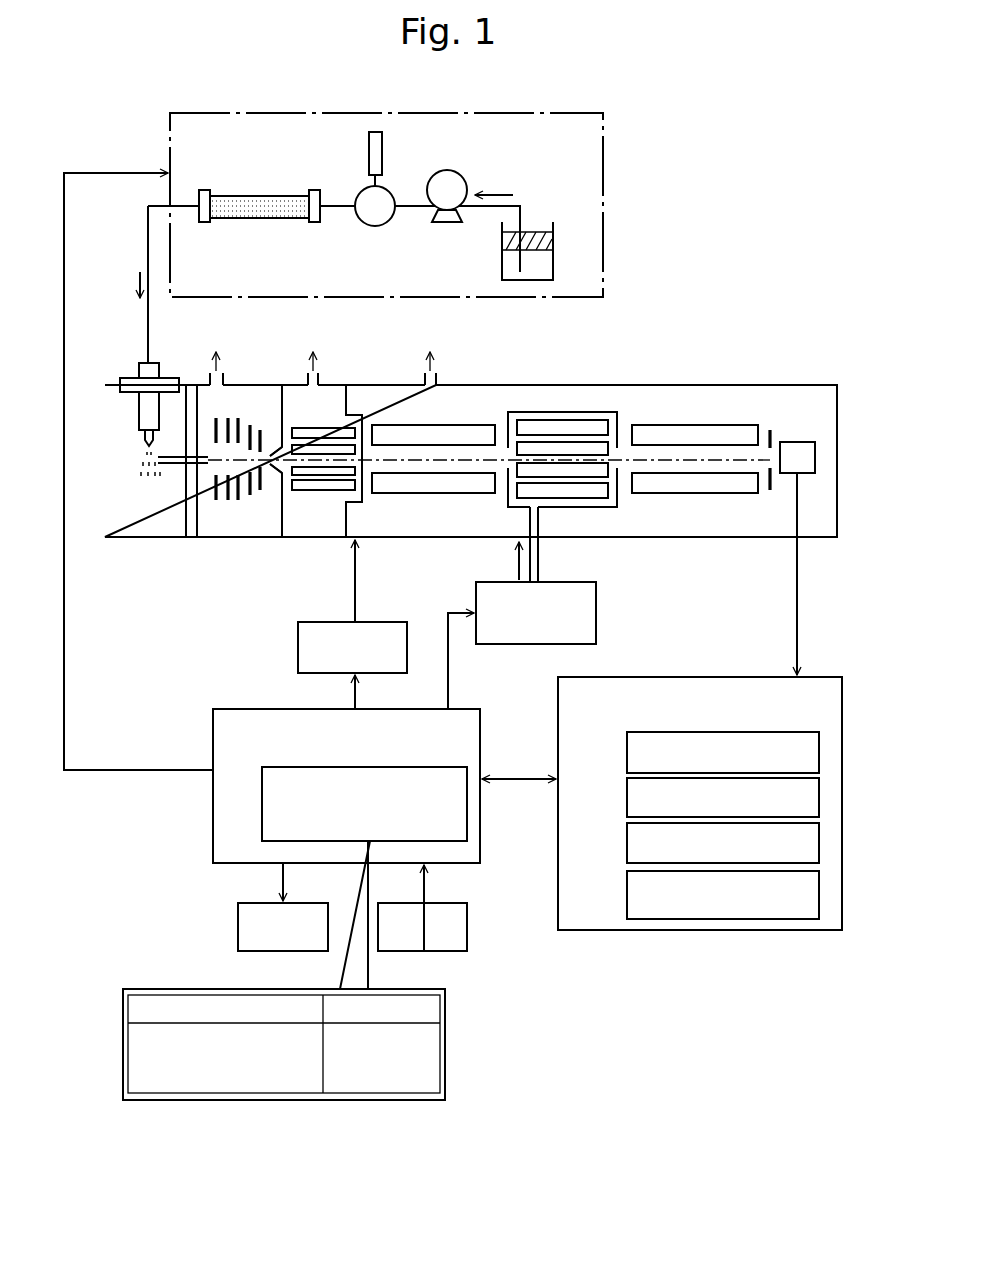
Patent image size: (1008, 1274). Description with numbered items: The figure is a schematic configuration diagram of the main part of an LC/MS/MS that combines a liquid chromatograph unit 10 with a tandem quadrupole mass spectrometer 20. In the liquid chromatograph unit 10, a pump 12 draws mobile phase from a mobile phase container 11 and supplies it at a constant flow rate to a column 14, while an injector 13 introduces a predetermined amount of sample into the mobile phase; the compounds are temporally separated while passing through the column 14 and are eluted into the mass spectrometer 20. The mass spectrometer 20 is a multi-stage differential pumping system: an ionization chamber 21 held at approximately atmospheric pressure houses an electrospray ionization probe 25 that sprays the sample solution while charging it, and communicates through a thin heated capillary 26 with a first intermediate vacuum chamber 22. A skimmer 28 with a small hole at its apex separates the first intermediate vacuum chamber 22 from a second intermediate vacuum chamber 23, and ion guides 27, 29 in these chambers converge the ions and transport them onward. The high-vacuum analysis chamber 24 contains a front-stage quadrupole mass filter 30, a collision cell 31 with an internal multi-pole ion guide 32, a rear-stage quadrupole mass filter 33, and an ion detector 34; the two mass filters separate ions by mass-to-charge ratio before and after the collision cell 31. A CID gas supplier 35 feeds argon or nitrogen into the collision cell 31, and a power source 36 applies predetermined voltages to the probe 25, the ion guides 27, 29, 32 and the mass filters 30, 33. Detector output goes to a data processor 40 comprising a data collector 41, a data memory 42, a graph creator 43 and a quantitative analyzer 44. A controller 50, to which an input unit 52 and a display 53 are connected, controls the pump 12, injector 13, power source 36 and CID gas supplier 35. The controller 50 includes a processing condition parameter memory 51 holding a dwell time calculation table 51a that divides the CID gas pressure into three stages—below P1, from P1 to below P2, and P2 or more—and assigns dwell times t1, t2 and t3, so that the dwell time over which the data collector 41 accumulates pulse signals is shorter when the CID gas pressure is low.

The liquid chromatograph unit 10 is at (604, 137).
The mobile phase container 11 is at (553, 250).
The pump 12 is at (450, 223).
The injector 13 is at (378, 226).
The column 14 is at (276, 222).
The mass spectrometer 20 is at (685, 336).
The ionization chamber 21 is at (137, 530).
The first intermediate vacuum chamber 22 is at (212, 530).
The second intermediate vacuum chamber 23 is at (296, 530).
The analysis chamber 24 is at (406, 530).
The electrospray ionization probe 25 is at (138, 410).
The heated capillary 26 is at (178, 466).
The ion guide 27 is at (245, 415).
The skimmer 28 is at (275, 470).
The ion guide 29 is at (327, 428).
The front-stage quadrupole mass filter 30 is at (462, 426).
The collision cell 31 is at (594, 412).
The multi-pole ion guide 32 is at (548, 420).
The rear-stage quadrupole mass filter 33 is at (720, 425).
The ion detector 34 is at (797, 442).
The CID gas supplier 35 is at (598, 600).
The power source 36 is at (297, 637).
The data processor 40 is at (655, 677).
The data collector 41 is at (626, 748).
The data memory 42 is at (626, 794).
The graph creator 43 is at (626, 841).
The quantitative analyzer 44 is at (626, 888).
The controller 50 is at (212, 731).
The processing condition parameter memory 51 is at (261, 803).
The dwell time calculation table 51a is at (123, 1036).
The input unit 52 is at (469, 921).
The display 53 is at (237, 924).